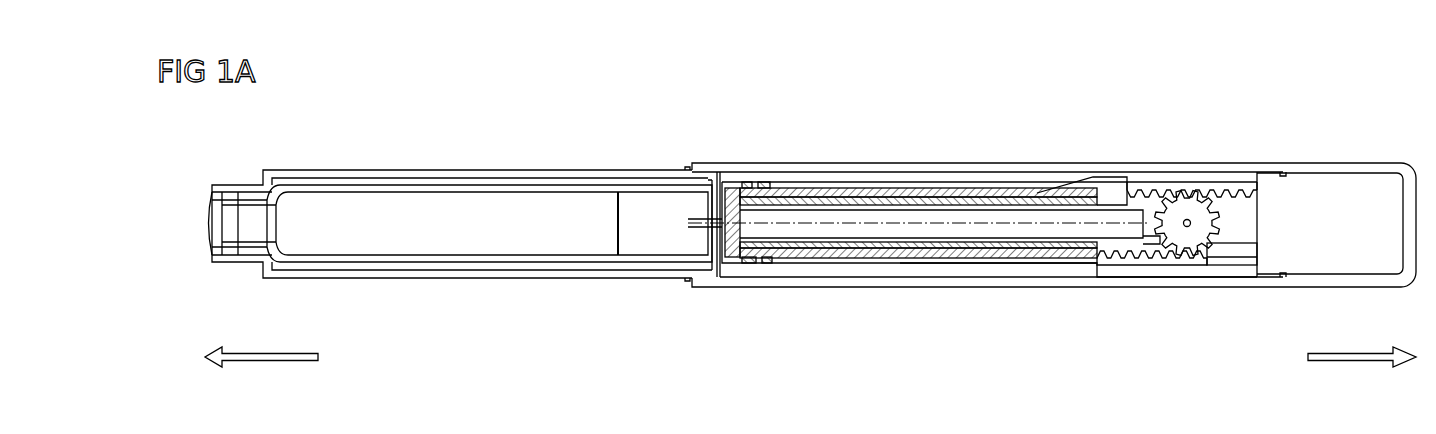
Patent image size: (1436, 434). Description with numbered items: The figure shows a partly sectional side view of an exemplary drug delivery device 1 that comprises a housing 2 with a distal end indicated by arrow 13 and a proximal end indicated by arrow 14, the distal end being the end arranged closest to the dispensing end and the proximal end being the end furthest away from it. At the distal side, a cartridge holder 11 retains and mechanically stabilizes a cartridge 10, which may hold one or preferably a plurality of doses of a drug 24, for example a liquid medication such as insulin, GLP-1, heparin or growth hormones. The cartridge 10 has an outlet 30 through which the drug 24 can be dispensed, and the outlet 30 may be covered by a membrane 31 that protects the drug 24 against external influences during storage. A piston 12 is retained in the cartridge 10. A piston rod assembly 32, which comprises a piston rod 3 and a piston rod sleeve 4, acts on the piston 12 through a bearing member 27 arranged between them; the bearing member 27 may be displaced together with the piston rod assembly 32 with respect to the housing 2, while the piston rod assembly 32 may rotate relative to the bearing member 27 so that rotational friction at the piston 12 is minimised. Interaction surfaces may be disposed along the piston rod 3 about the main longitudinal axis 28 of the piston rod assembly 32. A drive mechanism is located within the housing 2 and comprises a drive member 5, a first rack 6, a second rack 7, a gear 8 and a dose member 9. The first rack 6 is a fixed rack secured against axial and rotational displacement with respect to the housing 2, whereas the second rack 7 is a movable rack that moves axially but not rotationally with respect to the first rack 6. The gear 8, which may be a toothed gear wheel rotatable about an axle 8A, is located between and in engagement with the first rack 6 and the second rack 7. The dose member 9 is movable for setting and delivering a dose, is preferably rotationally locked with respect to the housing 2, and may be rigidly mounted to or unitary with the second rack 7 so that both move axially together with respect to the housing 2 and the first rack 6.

The drug delivery device 1 is at (679, 118).
The housing 2 is at (1120, 278).
The piston rod 3 is at (834, 193).
The piston rod sleeve 4 is at (916, 198).
The drive member 5 is at (1008, 200).
The first rack 6 is at (1234, 183).
The second rack 7 is at (1238, 272).
The gear 8 is at (1186, 256).
The axle 8A is at (1190, 223).
The dose member 9 is at (1351, 172).
The cartridge 10 is at (400, 185).
The cartridge holder 11 is at (315, 170).
The piston 12 is at (652, 210).
The arrow 13 is at (276, 355).
The arrow 14 is at (1347, 355).
The drug 24 is at (490, 205).
The bearing member 27 is at (730, 185).
The main longitudinal axis 28 is at (1015, 258).
The outlet 30 is at (231, 205).
The membrane 31 is at (208, 224).
The piston rod assembly 32 is at (840, 262).